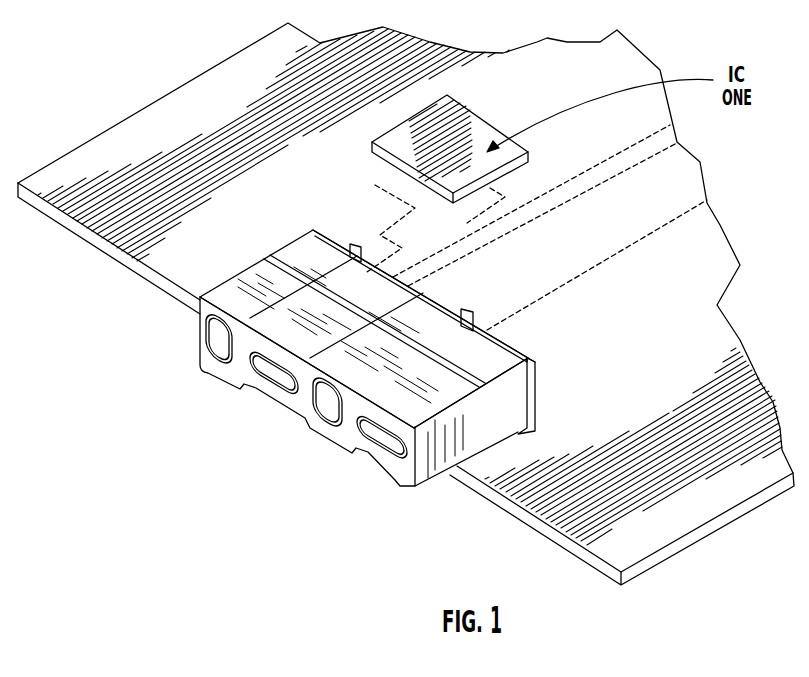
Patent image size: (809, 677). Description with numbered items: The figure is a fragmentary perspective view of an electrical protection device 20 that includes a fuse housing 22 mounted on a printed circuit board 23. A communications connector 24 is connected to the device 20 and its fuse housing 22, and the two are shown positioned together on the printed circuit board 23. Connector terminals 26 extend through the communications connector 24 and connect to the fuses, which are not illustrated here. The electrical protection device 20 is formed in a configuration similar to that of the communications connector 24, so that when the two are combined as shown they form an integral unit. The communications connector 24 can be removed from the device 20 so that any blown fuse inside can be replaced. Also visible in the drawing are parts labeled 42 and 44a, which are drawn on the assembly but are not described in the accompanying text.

The electrical protection device 20 is at (543, 344).
The fuse housing 22 is at (531, 397).
The printed circuit board 23 is at (138, 158).
The communications connector 24 is at (432, 489).
The connector terminals 26 is at (382, 433).
The top shell / cover 42 is at (529, 358).
The mounting tabs 44a is at (355, 243).